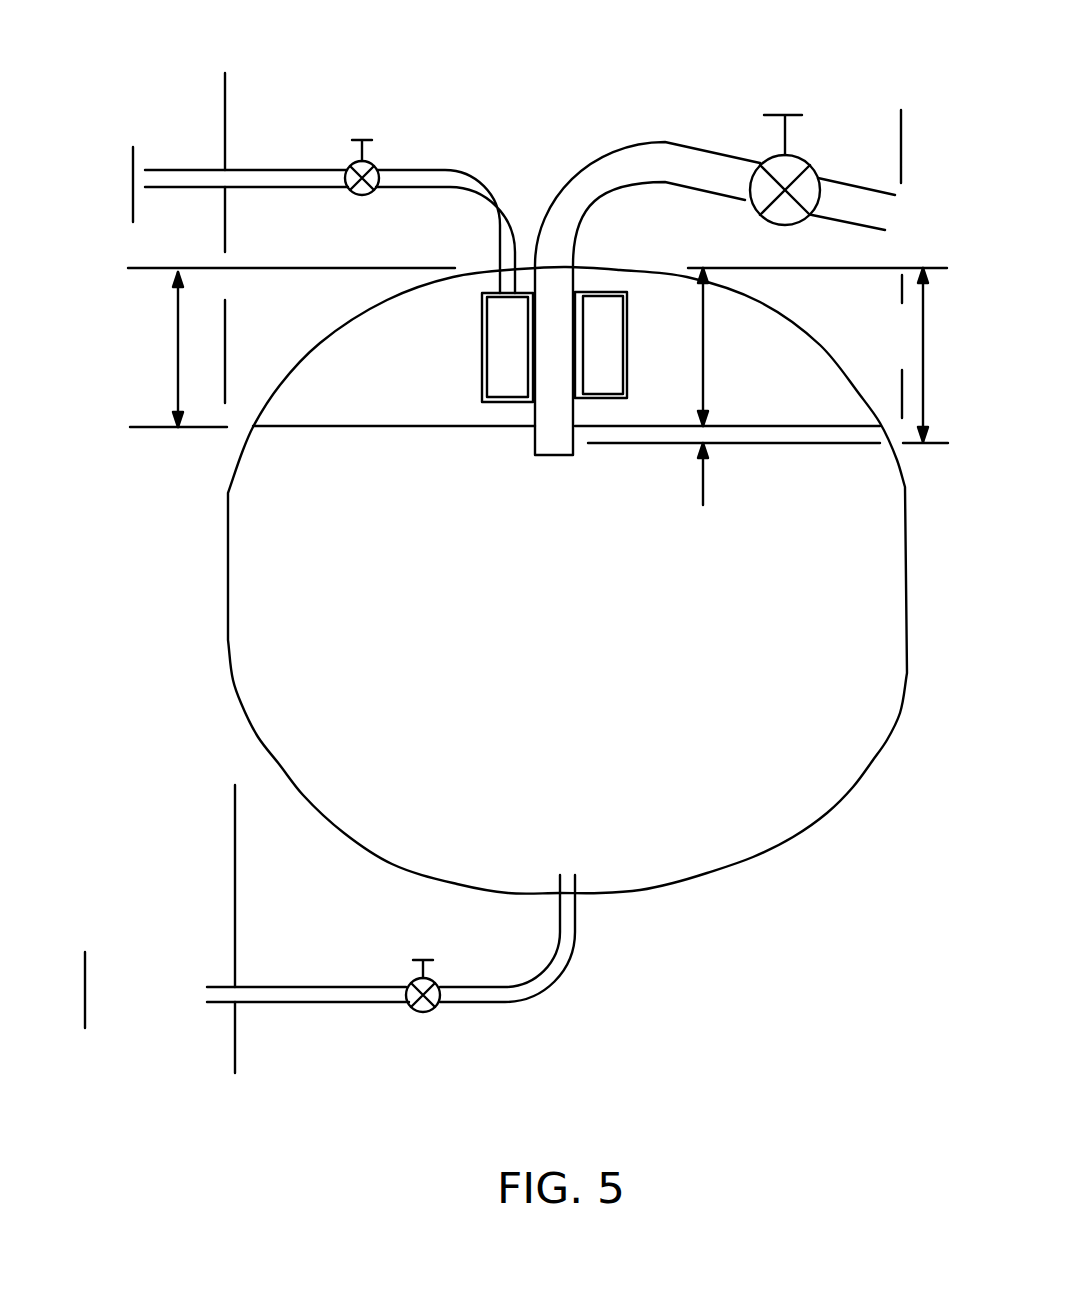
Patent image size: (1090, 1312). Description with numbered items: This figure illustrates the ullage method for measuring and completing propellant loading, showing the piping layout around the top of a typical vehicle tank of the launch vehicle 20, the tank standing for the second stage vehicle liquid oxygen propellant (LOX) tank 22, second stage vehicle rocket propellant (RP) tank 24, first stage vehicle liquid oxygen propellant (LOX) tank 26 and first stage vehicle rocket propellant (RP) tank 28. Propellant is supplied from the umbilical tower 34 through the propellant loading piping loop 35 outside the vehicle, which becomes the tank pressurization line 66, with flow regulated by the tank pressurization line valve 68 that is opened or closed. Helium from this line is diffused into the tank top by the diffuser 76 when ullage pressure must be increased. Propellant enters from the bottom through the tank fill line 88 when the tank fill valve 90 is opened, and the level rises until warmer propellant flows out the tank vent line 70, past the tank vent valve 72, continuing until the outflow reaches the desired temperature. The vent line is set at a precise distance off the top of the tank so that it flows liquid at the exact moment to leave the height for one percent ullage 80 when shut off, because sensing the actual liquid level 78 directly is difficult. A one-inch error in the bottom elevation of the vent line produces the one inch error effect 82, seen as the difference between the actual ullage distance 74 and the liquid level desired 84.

The launch vehicle 20 is at (233, 870).
The second stage vehicle liquid oxygen propellant (LOX) tank 22 is at (567, 580).
The second stage vehicle rocket propellant (RP) tank 24 is at (567, 580).
The first stage vehicle liquid oxygen propellant (LOX) tank 26 is at (567, 580).
The first stage vehicle rocket propellant (RP) tank 28 is at (902, 478).
The umbilical tower 34 is at (85, 987).
The propellant loading piping loop 35 is at (235, 1003).
The tank pressurization line 66 is at (468, 172).
The tank pressurization line valve 68 is at (352, 163).
The tank vent line 70 is at (623, 145).
The tank vent valve 72 is at (785, 115).
The ullage distance—actual 74 is at (175, 357).
The diffuser 76 is at (512, 370).
The liquid level—actual 78 is at (315, 432).
The height for 1% ullage 80 is at (733, 347).
The 1" error effect 82 is at (768, 485).
The liquid level desired for the present invention 84 is at (903, 355).
The tank fill line 88 is at (530, 997).
The tank fill valve 90 is at (410, 1013).